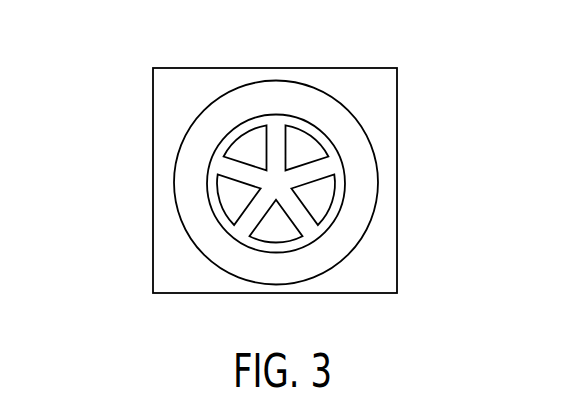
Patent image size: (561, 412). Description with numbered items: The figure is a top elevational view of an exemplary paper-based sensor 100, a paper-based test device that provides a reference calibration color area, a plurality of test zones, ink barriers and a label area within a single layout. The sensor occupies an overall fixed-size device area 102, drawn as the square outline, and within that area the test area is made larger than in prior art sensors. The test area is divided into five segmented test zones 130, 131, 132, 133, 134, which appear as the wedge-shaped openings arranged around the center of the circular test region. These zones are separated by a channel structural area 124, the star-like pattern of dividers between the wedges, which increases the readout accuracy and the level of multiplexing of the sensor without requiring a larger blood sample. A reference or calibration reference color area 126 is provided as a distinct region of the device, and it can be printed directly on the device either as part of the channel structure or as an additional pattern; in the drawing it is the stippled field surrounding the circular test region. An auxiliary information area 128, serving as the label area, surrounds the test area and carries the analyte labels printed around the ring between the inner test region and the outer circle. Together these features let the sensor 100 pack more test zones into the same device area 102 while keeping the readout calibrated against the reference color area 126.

The paper-based sensor 100 is at (247, 180).
The device area 102 is at (152, 201).
The channel structural area 124 is at (320, 171).
The reference color area 126 is at (375, 266).
The auxiliary information area 128 is at (325, 97).
The test zone 130 is at (300, 138).
The test zone 131 is at (316, 201).
The test zone 132 is at (289, 227).
The test zone 133 is at (236, 207).
The test zone 134 is at (245, 150).